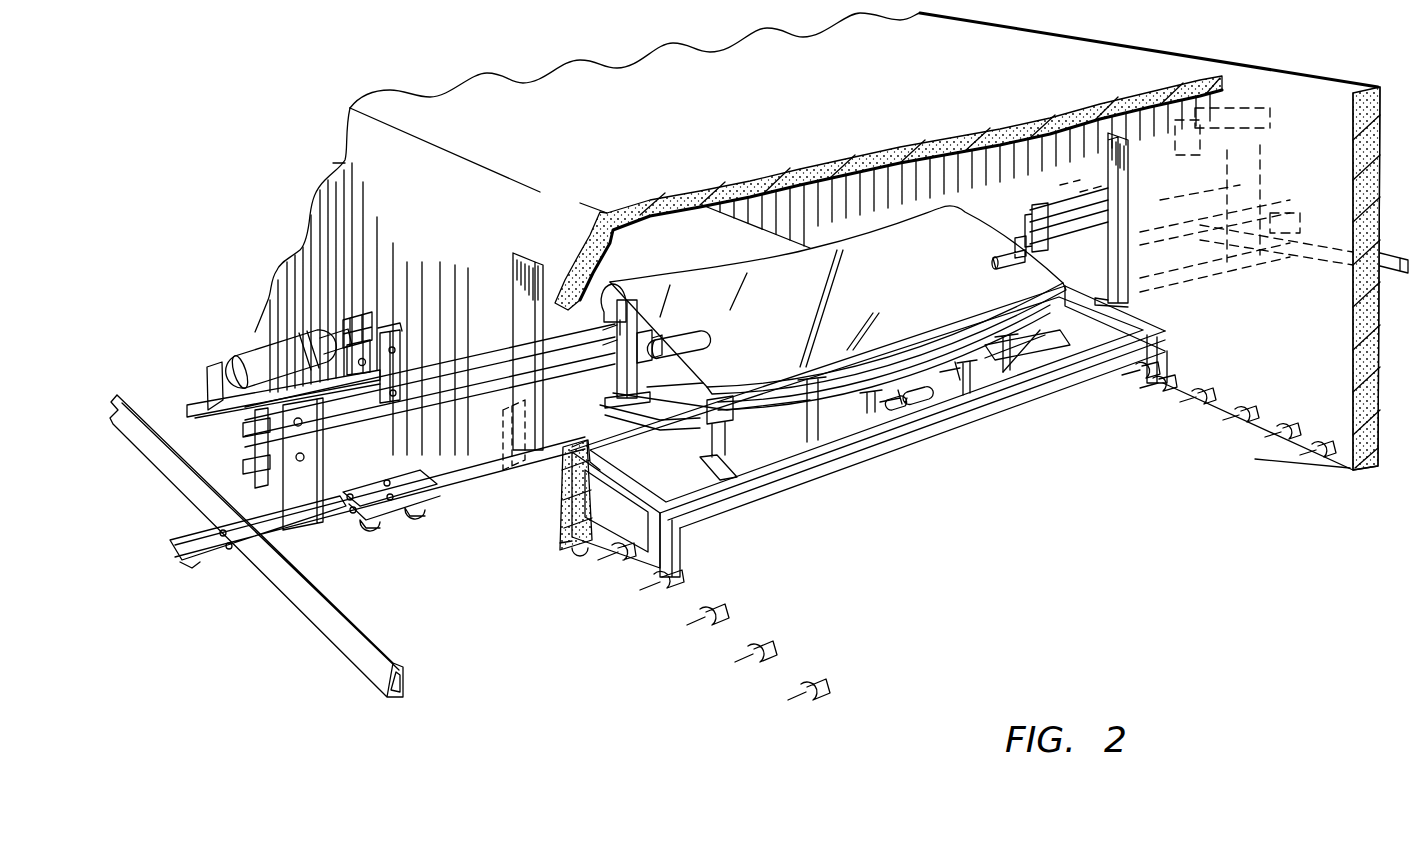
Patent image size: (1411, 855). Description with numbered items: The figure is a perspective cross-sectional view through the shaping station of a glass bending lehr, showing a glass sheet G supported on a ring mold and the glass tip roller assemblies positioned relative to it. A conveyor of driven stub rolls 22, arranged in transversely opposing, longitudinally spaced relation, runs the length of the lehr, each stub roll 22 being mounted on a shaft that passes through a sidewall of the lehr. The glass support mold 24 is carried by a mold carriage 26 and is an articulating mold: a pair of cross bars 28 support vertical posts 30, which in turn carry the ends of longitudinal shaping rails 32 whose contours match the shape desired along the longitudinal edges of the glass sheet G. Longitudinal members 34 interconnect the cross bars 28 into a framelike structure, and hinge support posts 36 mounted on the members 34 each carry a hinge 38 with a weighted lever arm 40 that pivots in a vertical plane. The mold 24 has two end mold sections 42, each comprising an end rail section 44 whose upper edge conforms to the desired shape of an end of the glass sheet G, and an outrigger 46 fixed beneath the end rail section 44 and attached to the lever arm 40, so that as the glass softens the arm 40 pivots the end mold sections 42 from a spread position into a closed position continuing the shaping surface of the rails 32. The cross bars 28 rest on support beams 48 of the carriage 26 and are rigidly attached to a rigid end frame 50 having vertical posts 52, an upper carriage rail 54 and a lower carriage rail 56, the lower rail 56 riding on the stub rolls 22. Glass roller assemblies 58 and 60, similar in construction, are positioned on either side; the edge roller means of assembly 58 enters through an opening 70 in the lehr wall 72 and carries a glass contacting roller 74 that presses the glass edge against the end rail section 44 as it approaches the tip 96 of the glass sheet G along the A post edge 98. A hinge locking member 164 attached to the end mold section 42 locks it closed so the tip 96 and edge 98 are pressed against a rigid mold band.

The stub rolls 22 is at (1308, 452).
The glass support mold 24 is at (866, 236).
The mold carriage 26 is at (962, 405).
The cross bars 28 is at (796, 415).
The vertical posts 30 is at (1000, 352).
The longitudinal shaping rails 32 is at (843, 372).
The longitudinal members 34 is at (1000, 370).
The hinge support posts 36 is at (884, 398).
The hinge 38 is at (872, 410).
The weighted lever arm 40 is at (922, 390).
The end mold sections 42 is at (666, 392).
The end rail section 44 is at (730, 395).
The outrigger 46 is at (698, 408).
The support beams 48 is at (1073, 373).
The rigid end frame 50 is at (1170, 370).
The vertical posts 52 is at (1170, 346).
The upper carriage rail 54 is at (1130, 313).
The lower carriage rail 56 is at (640, 560).
The glass roller assembly 58 is at (240, 348).
The glass roller assembly 60 is at (1100, 178).
The opening 70 is at (516, 290).
The lehr wall 72 is at (345, 163).
The glass contacting roller 74 is at (705, 340).
The tip 96 is at (614, 292).
The A post edge 98 is at (638, 333).
The hinge locking member 164 is at (707, 442).
The glass sheet G is at (940, 237).